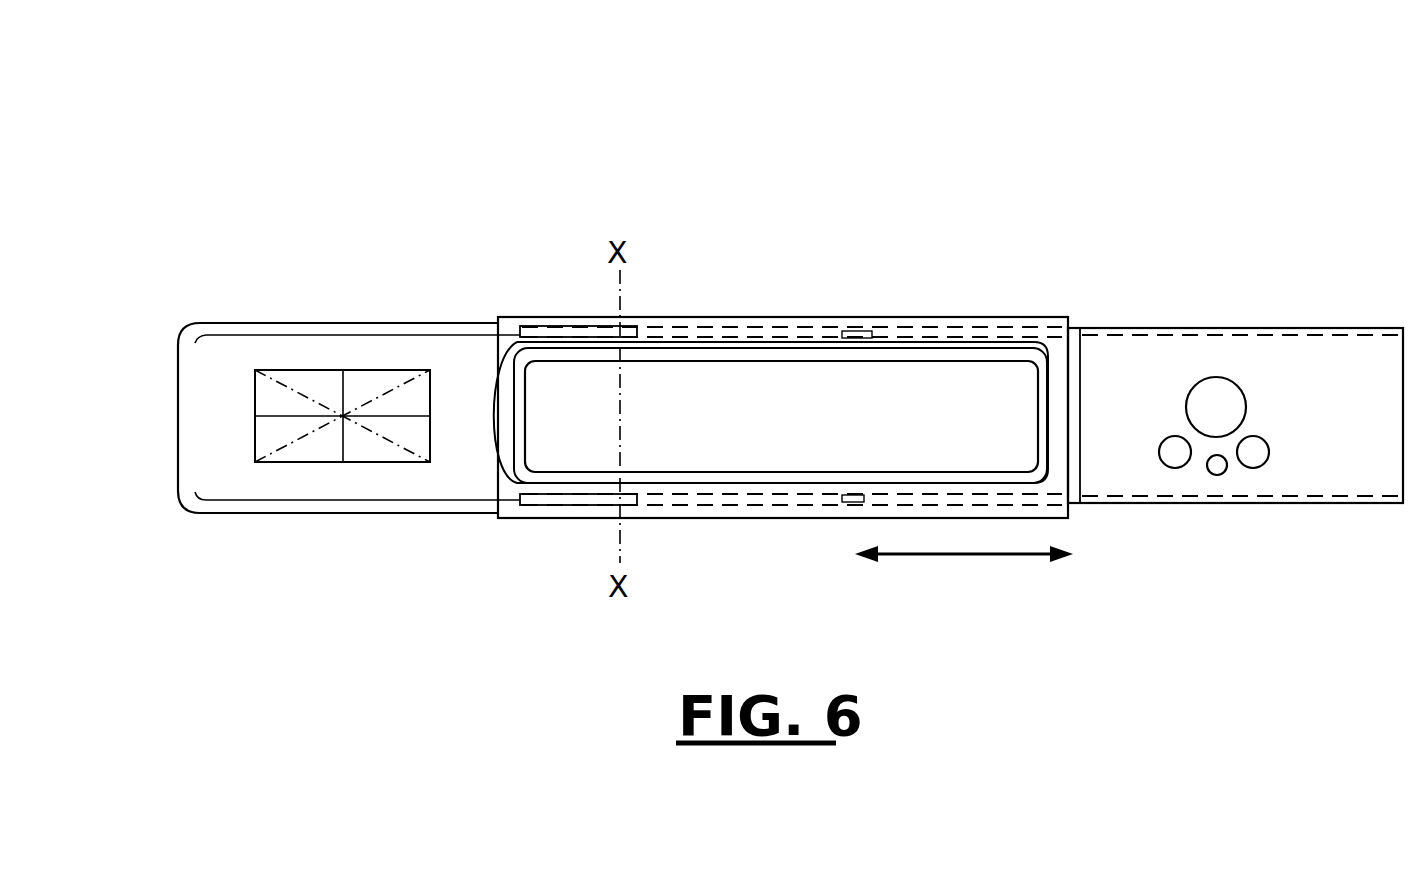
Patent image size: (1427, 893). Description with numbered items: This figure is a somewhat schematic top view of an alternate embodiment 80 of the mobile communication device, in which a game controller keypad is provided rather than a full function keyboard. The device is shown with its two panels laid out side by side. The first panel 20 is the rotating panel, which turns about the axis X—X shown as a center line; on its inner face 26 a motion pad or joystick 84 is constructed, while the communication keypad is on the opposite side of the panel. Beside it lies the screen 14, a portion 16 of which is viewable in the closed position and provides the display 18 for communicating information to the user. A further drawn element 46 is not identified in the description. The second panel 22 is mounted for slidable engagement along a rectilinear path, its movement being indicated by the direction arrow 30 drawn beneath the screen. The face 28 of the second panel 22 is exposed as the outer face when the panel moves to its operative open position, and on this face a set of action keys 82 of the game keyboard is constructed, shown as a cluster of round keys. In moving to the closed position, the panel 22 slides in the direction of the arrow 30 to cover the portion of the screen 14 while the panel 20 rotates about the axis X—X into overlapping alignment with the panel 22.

The alternate embodiment mobile communication device 80 is at (1090, 168).
The first panel 20 is at (308, 322).
The motion pad or joystick 84 is at (284, 462).
The face 26 is at (452, 366).
The screen 14 is at (783, 338).
The portion of the screen 16 is at (575, 437).
The display 18 is at (817, 428).
The guide rail 46 is at (935, 433).
The direction arrow 30 is at (982, 557).
The second panel 22 is at (1297, 327).
The face 28 is at (1148, 360).
The set of action keys 82 is at (1280, 440).